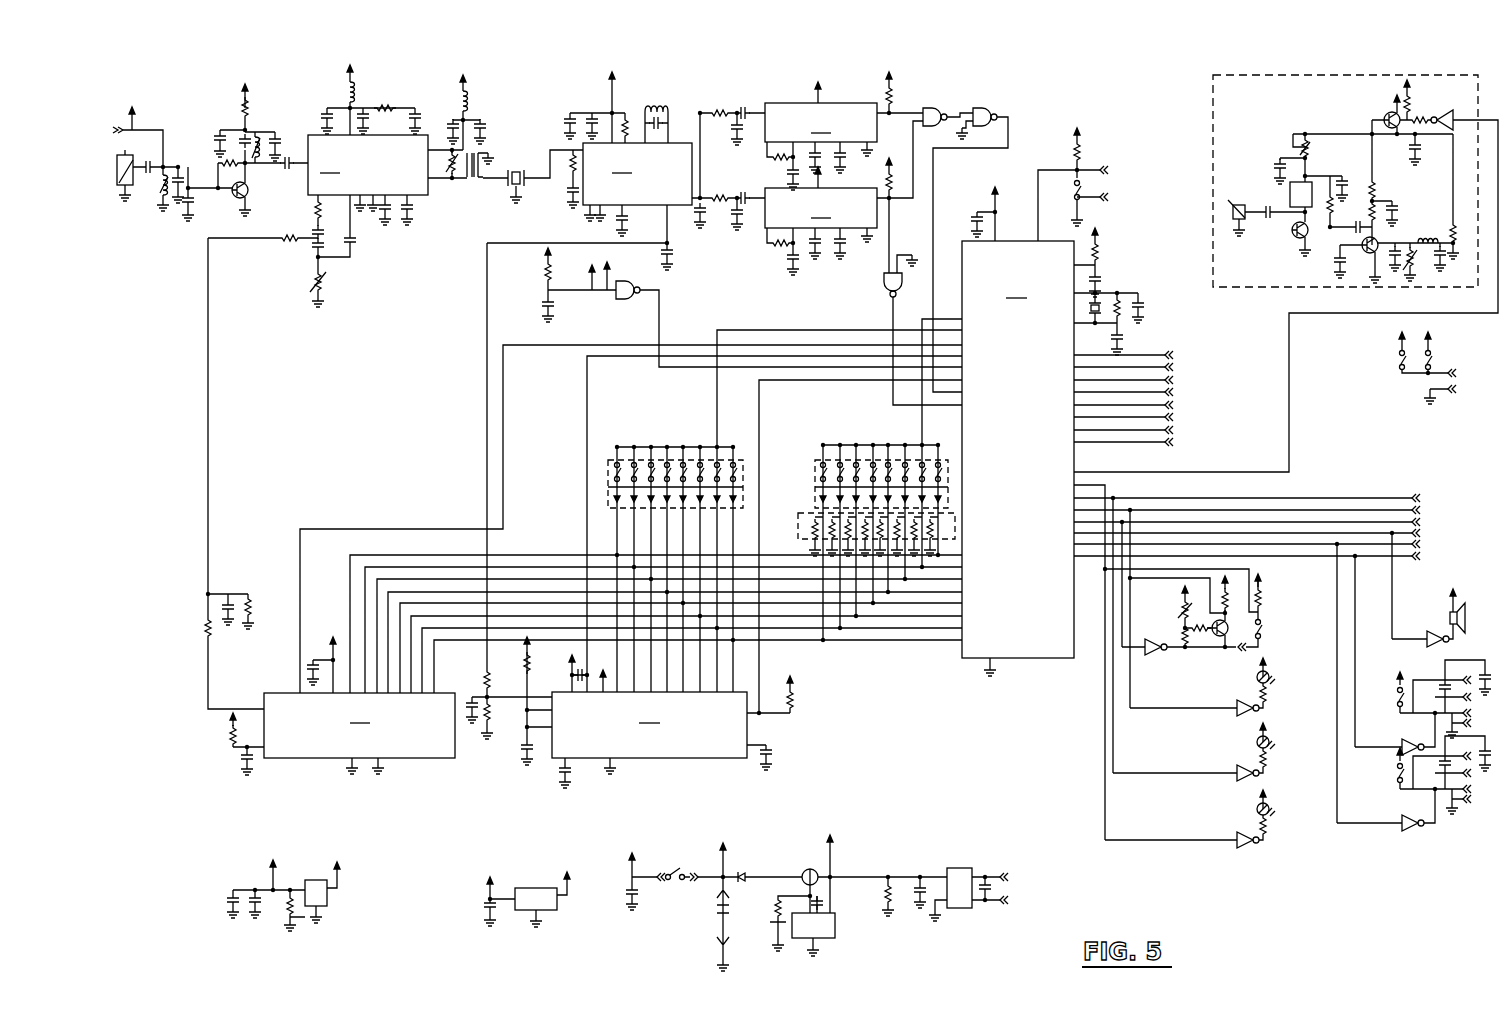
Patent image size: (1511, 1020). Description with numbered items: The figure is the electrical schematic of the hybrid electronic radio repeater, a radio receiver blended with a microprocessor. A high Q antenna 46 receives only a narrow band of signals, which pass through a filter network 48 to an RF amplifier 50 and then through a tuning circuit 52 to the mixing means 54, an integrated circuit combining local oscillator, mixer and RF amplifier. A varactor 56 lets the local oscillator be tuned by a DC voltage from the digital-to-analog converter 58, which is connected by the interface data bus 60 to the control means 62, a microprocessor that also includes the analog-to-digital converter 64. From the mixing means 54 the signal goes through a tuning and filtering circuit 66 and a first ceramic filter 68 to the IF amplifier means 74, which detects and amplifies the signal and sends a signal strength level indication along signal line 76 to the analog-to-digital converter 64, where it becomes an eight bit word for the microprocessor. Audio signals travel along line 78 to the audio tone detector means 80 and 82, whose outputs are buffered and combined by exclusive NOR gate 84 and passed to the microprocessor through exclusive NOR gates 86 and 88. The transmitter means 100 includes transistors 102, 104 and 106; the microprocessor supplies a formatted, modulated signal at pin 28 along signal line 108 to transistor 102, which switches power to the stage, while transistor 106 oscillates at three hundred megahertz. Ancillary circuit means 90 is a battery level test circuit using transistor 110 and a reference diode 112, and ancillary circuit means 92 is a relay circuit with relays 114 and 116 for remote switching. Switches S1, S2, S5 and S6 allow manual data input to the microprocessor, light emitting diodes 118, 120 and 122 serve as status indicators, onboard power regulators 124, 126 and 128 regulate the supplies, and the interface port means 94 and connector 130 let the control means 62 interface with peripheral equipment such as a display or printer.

The pin 28 is at (1082, 470).
The high Q antenna 46 is at (140, 195).
The filter network 48 is at (182, 150).
The RF amplifier 50 is at (250, 186).
The tuning circuit 52 is at (284, 143).
The mixing means 54 is at (387, 145).
The varactor 56 is at (314, 252).
The digital-to-analog converter 58 is at (330, 506).
The interface data bus 60 is at (751, 559).
The control means 62 is at (1053, 402).
The analog-to-digital converter 64 is at (646, 712).
The tuning and filtering circuit 66 is at (478, 117).
The first ceramic filter 68 is at (511, 166).
The IF amplifier means 74 is at (589, 171).
The signal line 76 is at (485, 275).
The line 78 is at (702, 198).
The audio tone detector means 80 is at (844, 198).
The audio tone detector means 82 is at (844, 131).
The exclusive NOR gate 84 is at (884, 285).
The exclusive NOR gate 86 is at (936, 108).
The exclusive NOR gate 88 is at (985, 110).
The ancillary circuit means 90 is at (1266, 620).
The ancillary circuit means 92 is at (1418, 763).
The interface port means 94 is at (1428, 497).
The transmitter means 100 is at (1348, 166).
The transistor 102 is at (1383, 118).
The transistor 104 is at (1291, 234).
The transistor 106 is at (1361, 251).
The signal line 108 is at (1288, 392).
The transistor 110 is at (1215, 644).
The diode 112 is at (1182, 603).
The relay 114 is at (1410, 794).
The relay 116 is at (1412, 718).
The light emitting diode 118 is at (1271, 812).
The light emitting diode 120 is at (1271, 747).
The light emitting diode 122 is at (1271, 680).
The onboard power regulator 124 is at (531, 882).
The onboard power regulator 126 is at (318, 880).
The onboard power regulator 128 is at (826, 930).
The interface port means 130 is at (1178, 352).
The switch S1 is at (815, 465).
The switch S2 is at (947, 463).
The switch S5 is at (609, 463).
The switch S6 is at (742, 463).